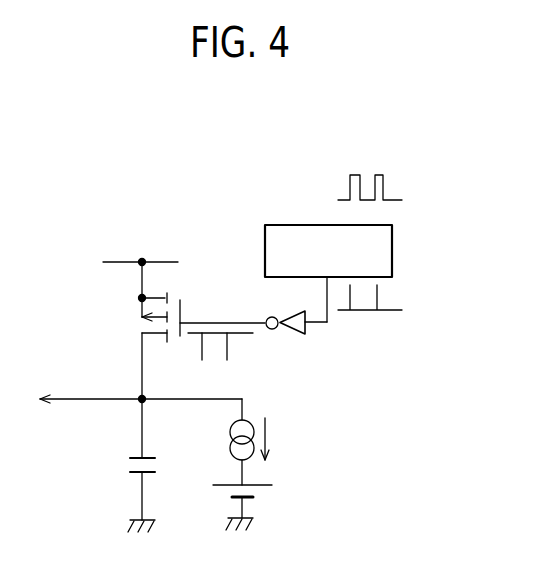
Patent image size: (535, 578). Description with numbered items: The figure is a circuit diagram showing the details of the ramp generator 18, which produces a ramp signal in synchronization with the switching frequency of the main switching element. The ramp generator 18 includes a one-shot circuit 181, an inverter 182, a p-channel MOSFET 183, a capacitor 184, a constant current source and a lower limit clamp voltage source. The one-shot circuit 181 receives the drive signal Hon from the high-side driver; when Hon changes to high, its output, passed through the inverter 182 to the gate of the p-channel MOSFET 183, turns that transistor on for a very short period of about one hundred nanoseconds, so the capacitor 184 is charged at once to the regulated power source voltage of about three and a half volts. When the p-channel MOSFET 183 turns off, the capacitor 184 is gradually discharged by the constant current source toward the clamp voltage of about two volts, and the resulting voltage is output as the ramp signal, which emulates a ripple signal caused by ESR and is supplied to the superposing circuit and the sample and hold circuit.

The ramp generator 18 is at (120, 177).
The one-shot circuit 181 is at (392, 251).
The inverter 182 is at (293, 334).
The p-channel MOSFET 183 is at (143, 331).
The capacitor 184 is at (127, 472).